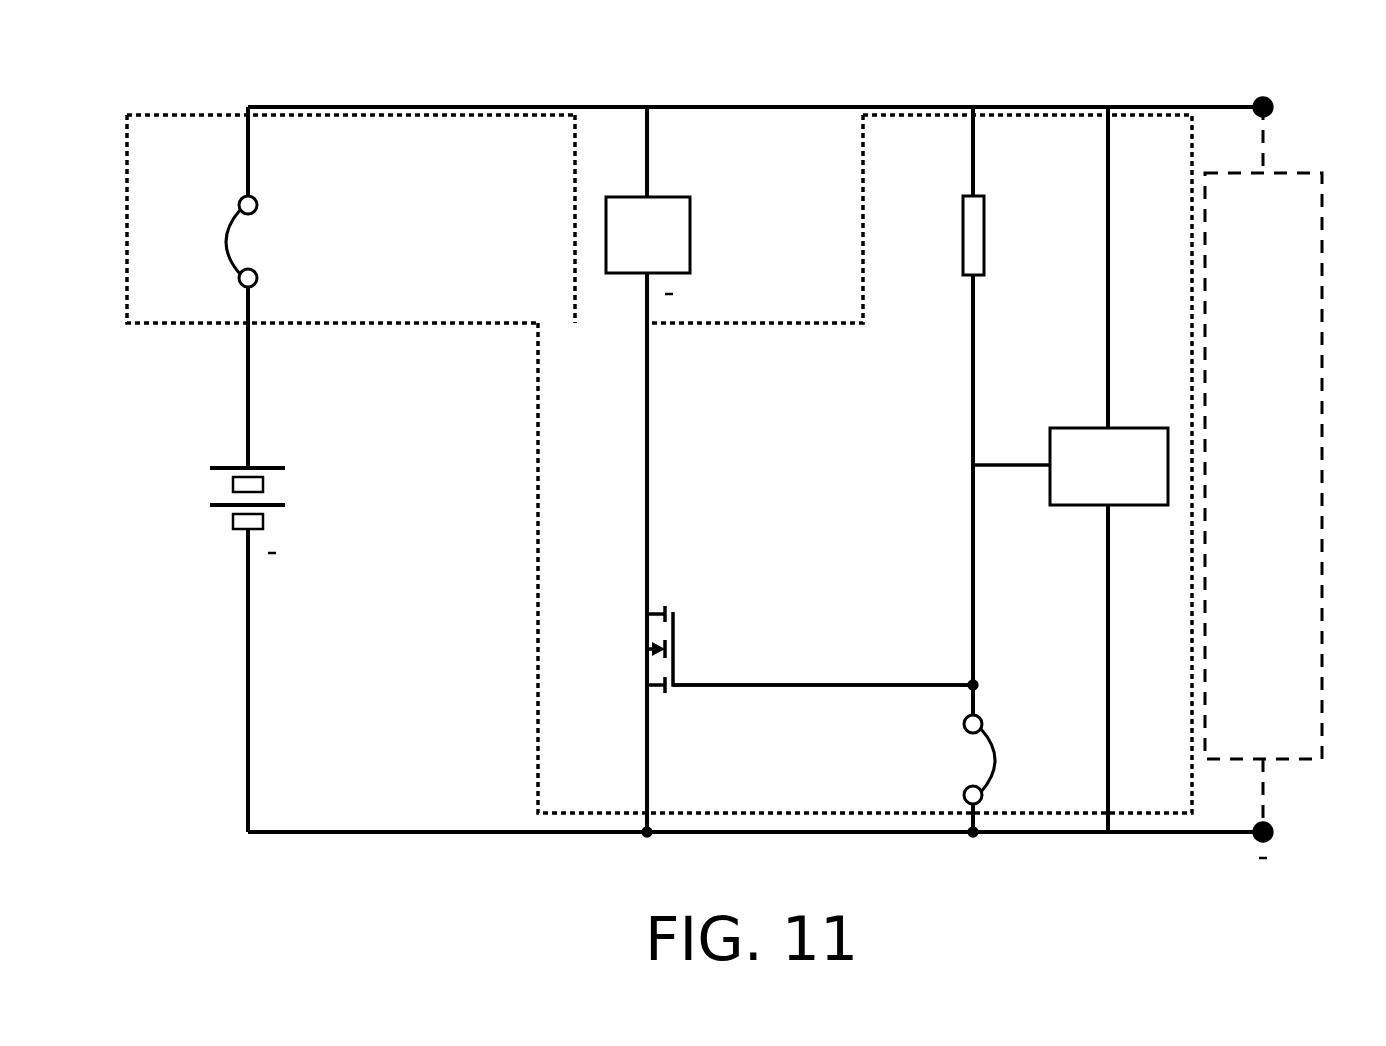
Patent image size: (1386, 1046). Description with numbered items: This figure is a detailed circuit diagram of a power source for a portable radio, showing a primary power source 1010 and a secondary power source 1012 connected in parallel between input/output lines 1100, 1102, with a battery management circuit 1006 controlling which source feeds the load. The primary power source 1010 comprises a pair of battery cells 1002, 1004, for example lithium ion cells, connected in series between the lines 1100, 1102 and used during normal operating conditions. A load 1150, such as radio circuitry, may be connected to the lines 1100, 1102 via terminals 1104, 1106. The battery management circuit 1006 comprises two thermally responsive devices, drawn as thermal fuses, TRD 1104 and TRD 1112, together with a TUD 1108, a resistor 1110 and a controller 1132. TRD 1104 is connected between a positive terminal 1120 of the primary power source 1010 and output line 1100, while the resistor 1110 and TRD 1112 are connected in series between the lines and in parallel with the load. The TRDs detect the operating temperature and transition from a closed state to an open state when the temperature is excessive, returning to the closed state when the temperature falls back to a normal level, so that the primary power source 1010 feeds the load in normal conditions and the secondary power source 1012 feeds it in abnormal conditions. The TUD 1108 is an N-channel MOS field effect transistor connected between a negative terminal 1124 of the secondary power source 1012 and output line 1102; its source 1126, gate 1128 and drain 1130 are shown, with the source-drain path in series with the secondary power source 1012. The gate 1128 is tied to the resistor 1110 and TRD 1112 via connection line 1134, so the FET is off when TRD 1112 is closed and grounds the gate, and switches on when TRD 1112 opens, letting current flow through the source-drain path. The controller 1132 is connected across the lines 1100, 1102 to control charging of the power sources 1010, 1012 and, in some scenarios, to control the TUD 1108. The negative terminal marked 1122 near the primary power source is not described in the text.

The battery cell 1002 is at (263, 487).
The battery cell 1004 is at (263, 526).
The battery management circuit 1006 is at (205, 115).
The primary power source 1010 is at (234, 504).
The secondary power source 1012 is at (648, 221).
The input/output line 1100 is at (355, 107).
The input/output line 1102 is at (378, 834).
The TRD (thermal fuse) / terminal 1104 is at (205, 192).
The terminal 1106 is at (1272, 830).
The TUD 1108 is at (769, 638).
The resistor 1110 is at (955, 215).
The TRD (thermal fuse) 1112 is at (1011, 742).
The positive terminal 1120 is at (285, 438).
The negative battery terminal 1122 is at (277, 567).
The negative terminal 1124 is at (680, 313).
The source 1126 is at (677, 600).
The gate 1128 is at (823, 648).
The drain 1130 is at (677, 684).
The controller 1132 is at (1070, 466).
The connection line 1134 is at (848, 684).
The load 1150 is at (1263, 469).